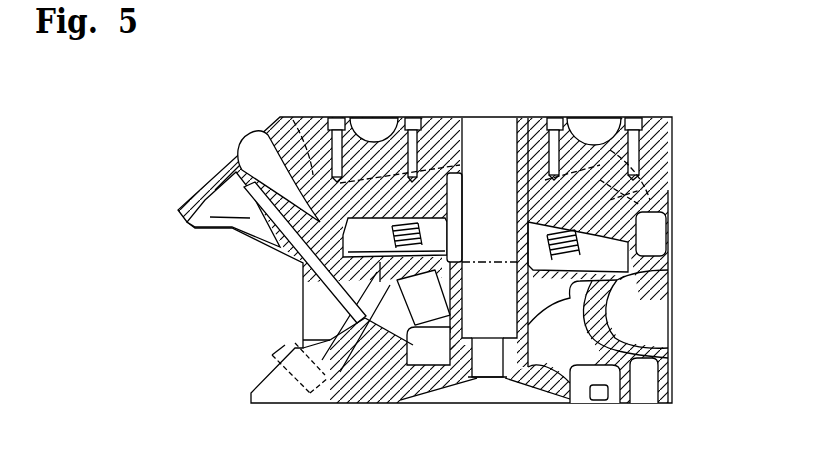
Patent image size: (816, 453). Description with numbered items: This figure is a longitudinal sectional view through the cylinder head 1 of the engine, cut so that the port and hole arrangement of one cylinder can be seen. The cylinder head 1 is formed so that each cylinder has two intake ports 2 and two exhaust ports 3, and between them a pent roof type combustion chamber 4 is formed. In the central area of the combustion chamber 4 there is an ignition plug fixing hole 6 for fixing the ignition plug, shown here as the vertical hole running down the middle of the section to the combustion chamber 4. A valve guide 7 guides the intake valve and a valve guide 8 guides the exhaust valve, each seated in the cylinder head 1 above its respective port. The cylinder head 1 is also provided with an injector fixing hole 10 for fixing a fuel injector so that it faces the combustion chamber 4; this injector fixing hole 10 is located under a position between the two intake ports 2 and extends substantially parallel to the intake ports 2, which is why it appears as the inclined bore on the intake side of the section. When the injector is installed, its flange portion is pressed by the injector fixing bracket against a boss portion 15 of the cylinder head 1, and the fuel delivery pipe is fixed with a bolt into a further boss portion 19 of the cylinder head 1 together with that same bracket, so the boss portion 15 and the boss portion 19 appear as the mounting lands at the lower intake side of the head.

The cylinder head 1 is at (430, 120).
The intake port 2 is at (266, 160).
The exhaust port 3 is at (655, 314).
The combustion chamber 4 is at (507, 393).
The ignition plug fixing hole 6 is at (500, 355).
The valve guide 7 is at (307, 264).
The valve guide 8 is at (670, 257).
The injector fixing hole 10 is at (343, 338).
The boss portion 15 is at (298, 343).
The boss portion 19 is at (287, 375).